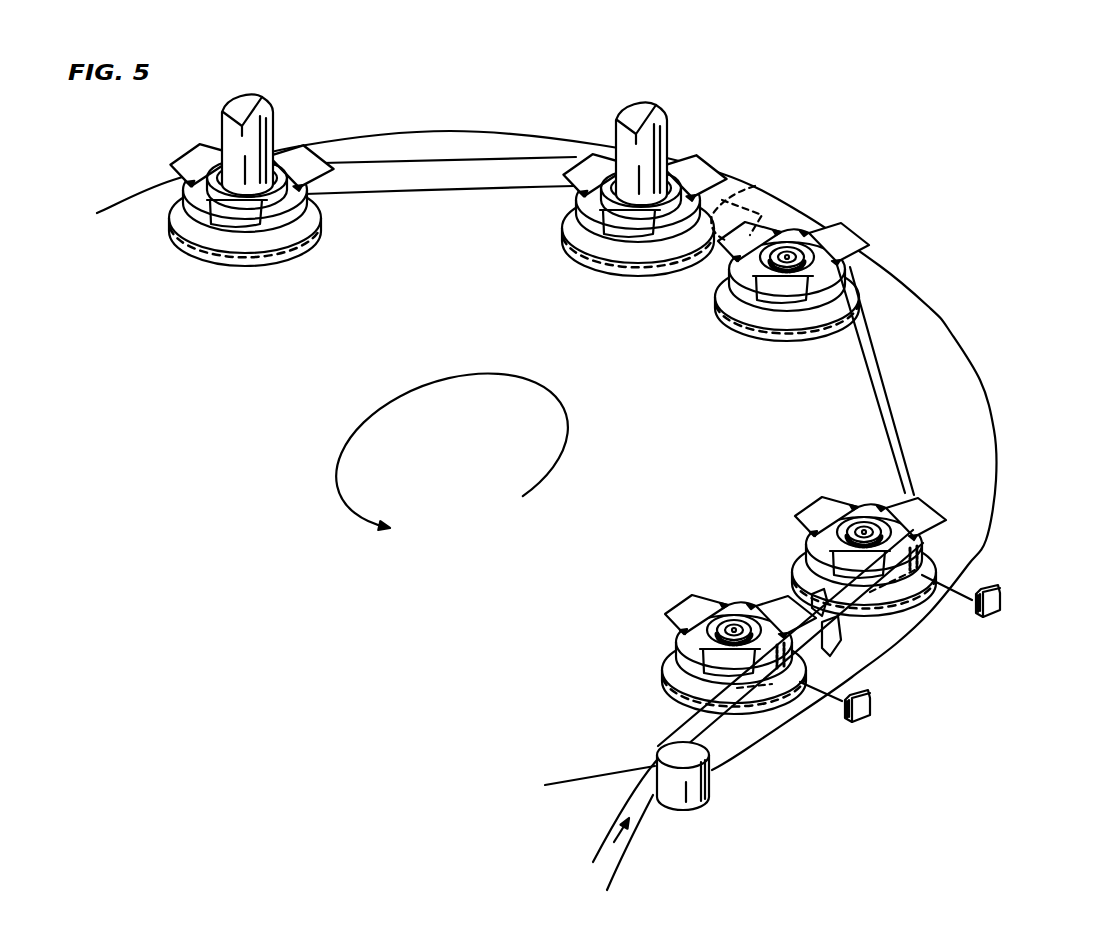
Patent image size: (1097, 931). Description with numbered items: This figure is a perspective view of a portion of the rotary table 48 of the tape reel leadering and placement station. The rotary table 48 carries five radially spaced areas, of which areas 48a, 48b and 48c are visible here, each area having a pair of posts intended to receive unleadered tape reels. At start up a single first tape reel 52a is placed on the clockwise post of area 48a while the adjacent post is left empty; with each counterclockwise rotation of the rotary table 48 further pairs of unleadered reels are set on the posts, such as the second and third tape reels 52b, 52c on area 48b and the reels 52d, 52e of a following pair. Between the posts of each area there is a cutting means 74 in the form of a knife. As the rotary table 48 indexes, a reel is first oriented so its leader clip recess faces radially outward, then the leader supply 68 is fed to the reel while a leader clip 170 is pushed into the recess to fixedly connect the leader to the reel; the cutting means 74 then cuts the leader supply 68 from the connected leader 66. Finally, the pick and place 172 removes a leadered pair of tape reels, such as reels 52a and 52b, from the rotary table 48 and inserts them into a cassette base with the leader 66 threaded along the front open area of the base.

The rotary table 48 is at (908, 364).
The radially spaced area 48a is at (167, 277).
The radially spaced area 48b is at (700, 278).
The radially spaced area 48c is at (757, 590).
The first tape reel 52a is at (283, 262).
The second tape reel 52b is at (588, 250).
The third tape reel 52c is at (742, 322).
The tape reel 52d is at (792, 528).
The tape reel 52e is at (653, 674).
The leader 66 is at (405, 180).
The leader supply 68 is at (607, 862).
The cutting means 74 is at (752, 188).
The leader clip 170 is at (1000, 604).
The pick and place 172 is at (274, 128).